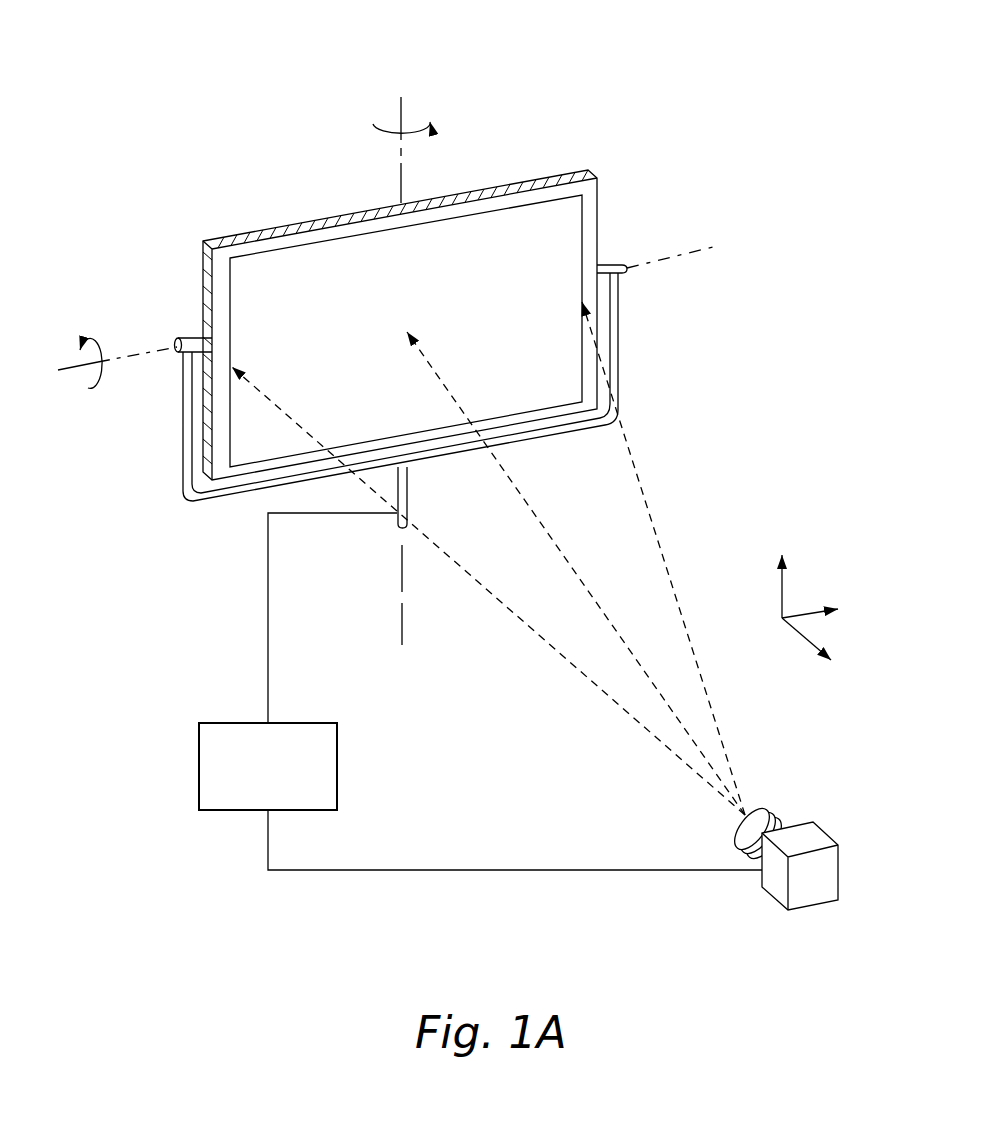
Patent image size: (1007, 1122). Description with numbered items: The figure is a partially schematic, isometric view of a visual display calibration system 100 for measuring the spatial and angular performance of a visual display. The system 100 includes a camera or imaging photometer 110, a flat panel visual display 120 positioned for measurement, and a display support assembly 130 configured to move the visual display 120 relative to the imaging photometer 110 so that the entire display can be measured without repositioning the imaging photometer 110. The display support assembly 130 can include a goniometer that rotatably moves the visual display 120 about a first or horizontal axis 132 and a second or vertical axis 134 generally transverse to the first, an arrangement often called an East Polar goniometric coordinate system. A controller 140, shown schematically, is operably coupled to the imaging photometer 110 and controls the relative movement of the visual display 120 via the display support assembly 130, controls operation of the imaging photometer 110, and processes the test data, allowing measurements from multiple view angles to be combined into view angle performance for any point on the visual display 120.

The visual display calibration system 100 is at (590, 65).
The imaging photometer 110 is at (817, 902).
The visual display 120 is at (599, 200).
The display support assembly 130 is at (618, 320).
The horizontal axis 132 is at (150, 350).
The vertical axis 134 is at (399, 170).
The controller 140 is at (220, 723).